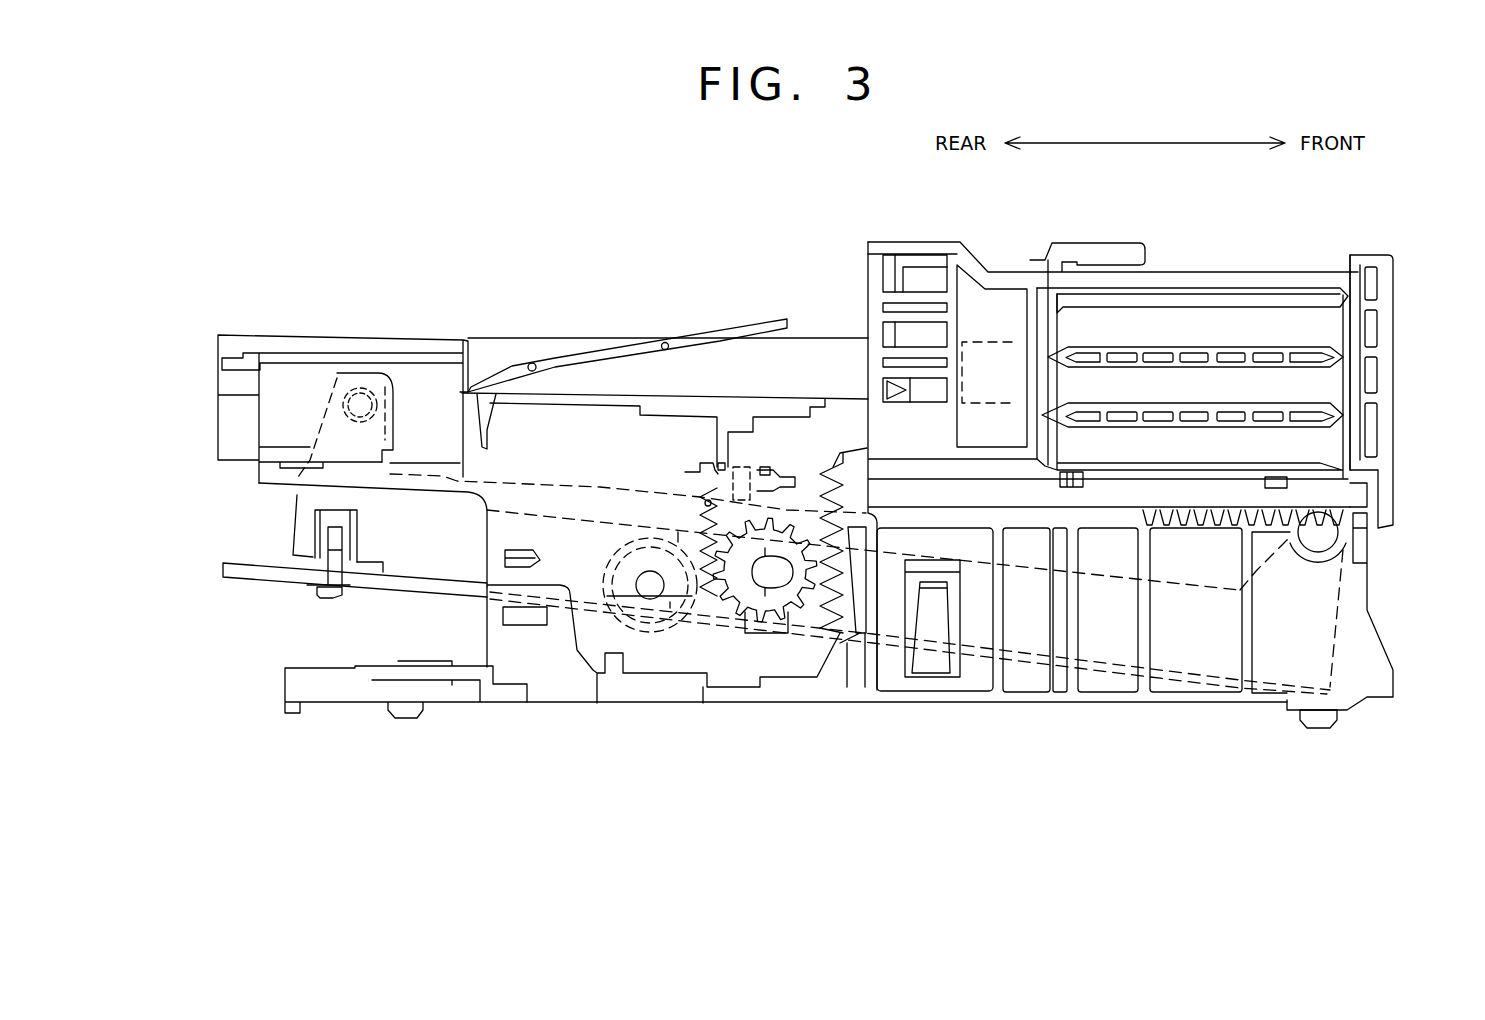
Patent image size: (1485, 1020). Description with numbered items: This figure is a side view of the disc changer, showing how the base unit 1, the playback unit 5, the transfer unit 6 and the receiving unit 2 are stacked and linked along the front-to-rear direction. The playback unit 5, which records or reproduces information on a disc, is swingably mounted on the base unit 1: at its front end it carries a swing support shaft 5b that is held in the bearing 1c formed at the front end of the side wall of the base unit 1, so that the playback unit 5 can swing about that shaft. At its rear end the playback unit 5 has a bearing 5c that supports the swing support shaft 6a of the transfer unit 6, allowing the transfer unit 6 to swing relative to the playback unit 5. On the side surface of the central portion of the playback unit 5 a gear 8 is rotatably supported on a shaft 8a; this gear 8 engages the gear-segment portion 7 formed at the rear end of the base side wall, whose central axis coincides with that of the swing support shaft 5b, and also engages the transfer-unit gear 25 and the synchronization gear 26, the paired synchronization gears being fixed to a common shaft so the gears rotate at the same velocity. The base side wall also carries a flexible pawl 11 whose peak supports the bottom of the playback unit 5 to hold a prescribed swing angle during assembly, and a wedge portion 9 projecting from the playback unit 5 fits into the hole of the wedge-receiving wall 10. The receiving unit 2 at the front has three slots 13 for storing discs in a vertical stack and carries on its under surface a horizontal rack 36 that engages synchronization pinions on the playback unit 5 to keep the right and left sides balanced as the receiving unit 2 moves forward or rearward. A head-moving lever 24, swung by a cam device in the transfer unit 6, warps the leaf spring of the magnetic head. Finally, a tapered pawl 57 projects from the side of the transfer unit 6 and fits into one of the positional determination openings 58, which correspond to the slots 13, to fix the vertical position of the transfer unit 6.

The base unit 1 is at (1112, 690).
The bearing 1c is at (1343, 562).
The receiving unit 2 is at (1208, 302).
The playback unit 5 is at (1028, 617).
The swing support shaft 5b is at (1330, 537).
The bearing 5c is at (333, 388).
The transfer unit 6 is at (575, 420).
The swing support shaft 6a is at (360, 397).
The gear-segment portion 7 is at (845, 625).
The gear 8 is at (770, 630).
The shaft 8a is at (753, 593).
The wedge portion 9 is at (503, 567).
The wedge-receiving wall 10 is at (510, 663).
The pawl 11 is at (935, 667).
The slots 13 is at (1325, 328).
The head-moving lever 24 is at (503, 377).
The transfer-unit gear 25 is at (697, 605).
The synchronization gear 26 is at (633, 627).
The racks 36 is at (1223, 520).
The pawl 57 is at (883, 378).
The positional determination openings 58 is at (917, 390).